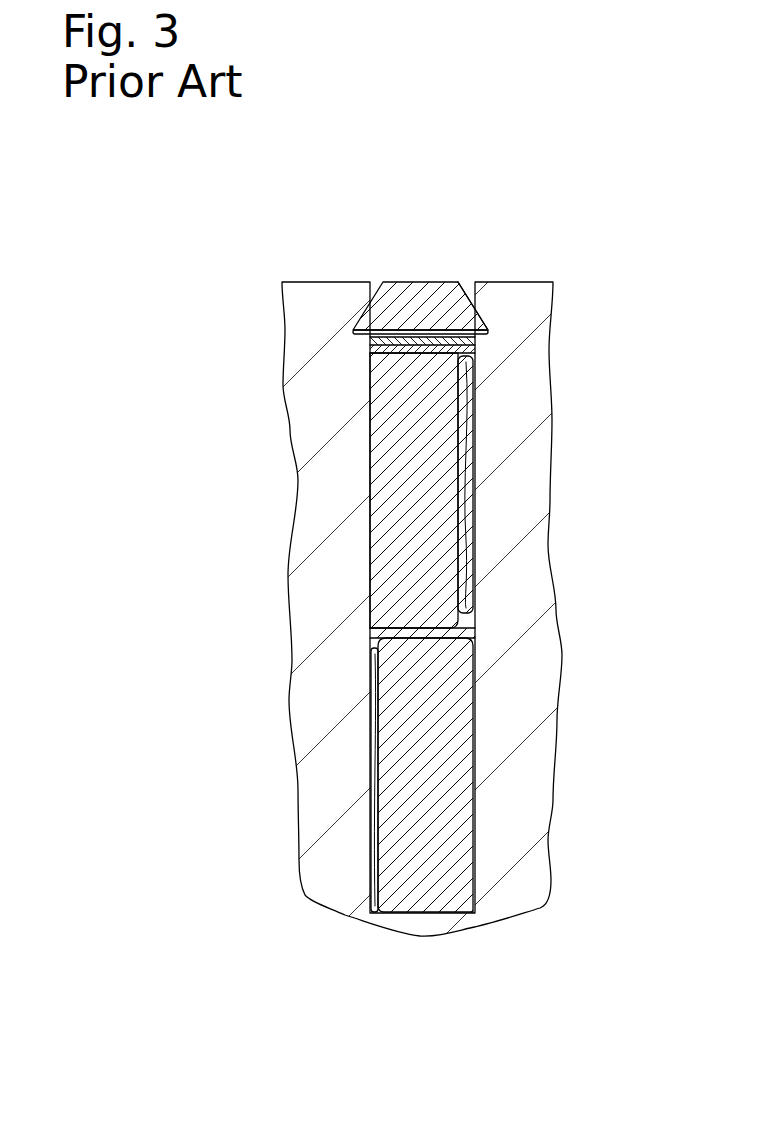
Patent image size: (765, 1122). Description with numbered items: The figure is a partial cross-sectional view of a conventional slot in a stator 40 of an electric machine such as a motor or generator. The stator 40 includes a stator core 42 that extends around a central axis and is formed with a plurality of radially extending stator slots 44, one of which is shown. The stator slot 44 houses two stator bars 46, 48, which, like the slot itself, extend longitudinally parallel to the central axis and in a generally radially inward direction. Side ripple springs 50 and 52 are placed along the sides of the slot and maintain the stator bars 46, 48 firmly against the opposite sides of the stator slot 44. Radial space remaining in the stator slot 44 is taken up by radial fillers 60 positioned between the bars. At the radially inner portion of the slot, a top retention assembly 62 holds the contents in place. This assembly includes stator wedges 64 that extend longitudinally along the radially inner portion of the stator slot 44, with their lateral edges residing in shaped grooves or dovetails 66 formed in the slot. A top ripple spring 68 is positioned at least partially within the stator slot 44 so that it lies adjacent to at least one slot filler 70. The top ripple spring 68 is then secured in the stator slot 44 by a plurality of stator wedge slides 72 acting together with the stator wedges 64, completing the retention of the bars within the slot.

The stator 40 is at (278, 212).
The stator core 42 is at (313, 491).
The stator slot 44 is at (382, 550).
The stator bar 46 is at (387, 805).
The stator bar 48 is at (372, 597).
The side ripple spring 50 is at (369, 742).
The side ripple spring 52 is at (477, 510).
The radial filler 60 is at (373, 630).
The top retention assembly 62 is at (350, 335).
The stator wedge 64 is at (378, 290).
The dovetail 66 is at (478, 313).
The top ripple spring 68 is at (370, 343).
The slot filler 70 is at (476, 349).
The stator wedge slide 72 is at (487, 333).